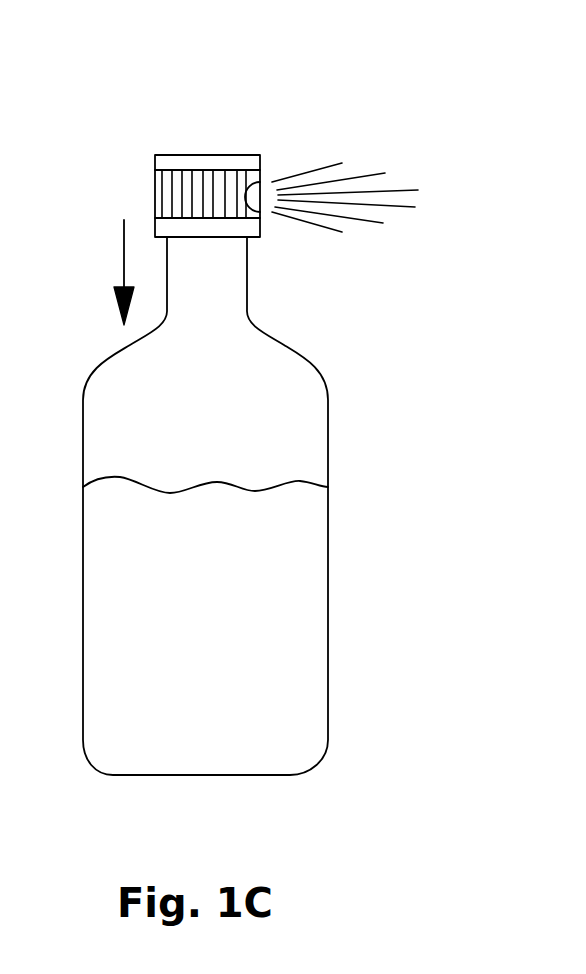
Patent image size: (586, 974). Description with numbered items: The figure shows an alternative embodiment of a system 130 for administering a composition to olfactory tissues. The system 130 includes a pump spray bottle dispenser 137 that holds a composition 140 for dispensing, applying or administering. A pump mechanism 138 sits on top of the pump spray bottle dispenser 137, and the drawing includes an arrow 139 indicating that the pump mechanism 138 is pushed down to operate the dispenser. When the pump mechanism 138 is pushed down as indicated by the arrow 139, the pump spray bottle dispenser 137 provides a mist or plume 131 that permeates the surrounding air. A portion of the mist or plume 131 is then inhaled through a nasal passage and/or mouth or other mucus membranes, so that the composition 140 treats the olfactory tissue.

The system 130 is at (442, 98).
The mist or plume 131 is at (402, 220).
The pump spray bottle dispenser 137 is at (328, 585).
The pump mechanism 138 is at (155, 183).
The arrow 139 is at (123, 252).
The composition 140 is at (224, 639).